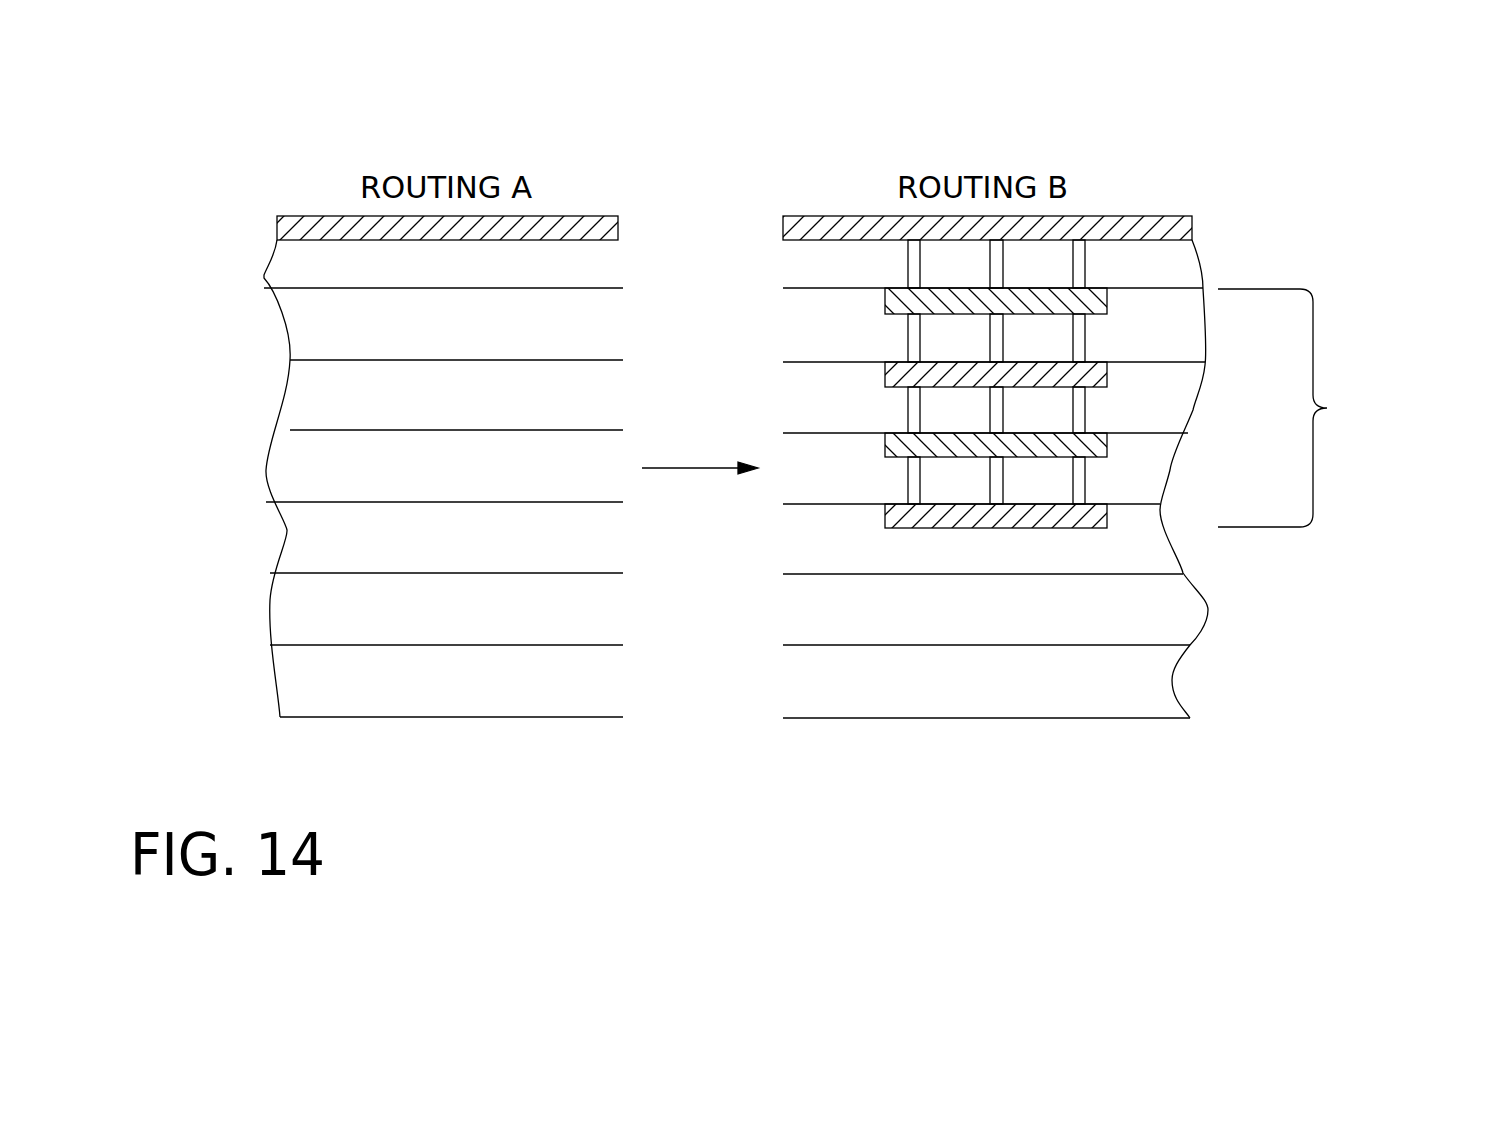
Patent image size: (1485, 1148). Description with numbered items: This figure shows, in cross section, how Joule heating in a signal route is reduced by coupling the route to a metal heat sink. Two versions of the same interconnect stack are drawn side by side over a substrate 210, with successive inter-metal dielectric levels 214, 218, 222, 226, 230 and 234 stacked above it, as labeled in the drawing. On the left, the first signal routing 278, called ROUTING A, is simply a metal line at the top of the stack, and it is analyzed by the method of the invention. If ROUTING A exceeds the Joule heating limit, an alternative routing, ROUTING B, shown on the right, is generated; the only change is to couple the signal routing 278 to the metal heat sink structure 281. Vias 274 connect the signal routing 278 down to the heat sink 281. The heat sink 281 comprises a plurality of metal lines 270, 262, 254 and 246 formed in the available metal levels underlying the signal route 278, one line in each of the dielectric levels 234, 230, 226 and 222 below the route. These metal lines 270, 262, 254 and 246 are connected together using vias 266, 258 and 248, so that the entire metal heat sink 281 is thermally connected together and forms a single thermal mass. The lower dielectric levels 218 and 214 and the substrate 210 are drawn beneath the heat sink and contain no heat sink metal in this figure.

The substrate 210 is at (300, 670).
The inter-metal dielectric layer IMD1 214 is at (300, 621).
The inter-metal dielectric layer IMD2 218 is at (300, 550).
The inter-metal dielectric layer IMD3 222 is at (300, 478).
The inter-metal dielectric layer IMD4 226 is at (300, 408).
The inter-metal dielectric layer IMD5 230 is at (300, 338).
The inter-metal dielectric layer IMD6 234 is at (300, 268).
The metal line 246 is at (887, 510).
The vias 248 is at (1080, 490).
The metal line 254 is at (887, 442).
The vias 258 is at (1080, 415).
The metal line 262 is at (887, 370).
The vias 266 is at (1080, 345).
The metal line 270 is at (887, 304).
The vias 274 is at (1080, 270).
The signal routing 278 is at (600, 228).
The metal heat sink structure 281 is at (1318, 355).